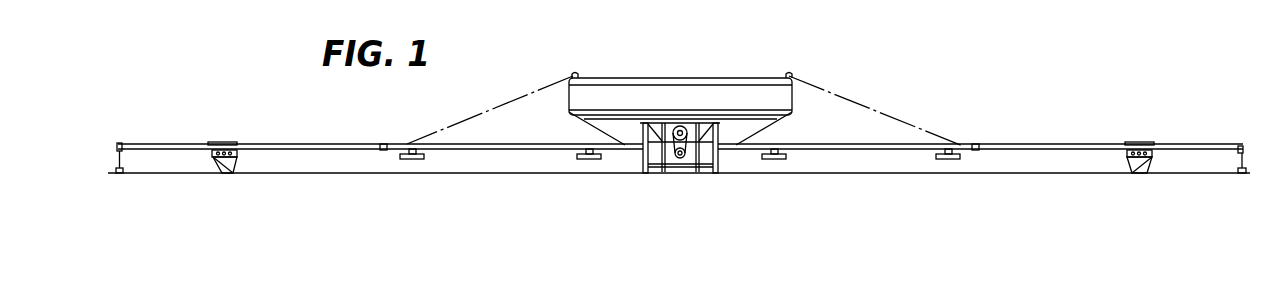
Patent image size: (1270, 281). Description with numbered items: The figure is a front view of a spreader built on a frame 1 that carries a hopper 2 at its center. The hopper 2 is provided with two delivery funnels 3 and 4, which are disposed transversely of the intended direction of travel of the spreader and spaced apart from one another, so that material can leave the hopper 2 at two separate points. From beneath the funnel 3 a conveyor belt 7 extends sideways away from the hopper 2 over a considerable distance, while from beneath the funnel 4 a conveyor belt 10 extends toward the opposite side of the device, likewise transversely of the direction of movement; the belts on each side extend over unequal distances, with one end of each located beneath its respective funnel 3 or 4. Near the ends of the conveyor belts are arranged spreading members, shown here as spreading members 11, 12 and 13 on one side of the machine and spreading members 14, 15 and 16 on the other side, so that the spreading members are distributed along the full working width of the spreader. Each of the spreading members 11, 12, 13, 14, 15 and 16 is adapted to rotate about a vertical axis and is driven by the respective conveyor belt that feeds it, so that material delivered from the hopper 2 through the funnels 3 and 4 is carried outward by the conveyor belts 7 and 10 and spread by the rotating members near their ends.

The frame 1 is at (640, 157).
The hopper 2 is at (736, 78).
The delivery funnel 3 is at (598, 129).
The delivery funnel 4 is at (760, 130).
The conveyor belt 7 is at (299, 144).
The conveyor belt 10 is at (1027, 143).
The spreading member 11 is at (584, 160).
The spreading member 12 is at (412, 160).
The spreading member 13 is at (227, 173).
The spreading member 14 is at (772, 160).
The spreading member 15 is at (947, 160).
The spreading member 16 is at (1130, 173).